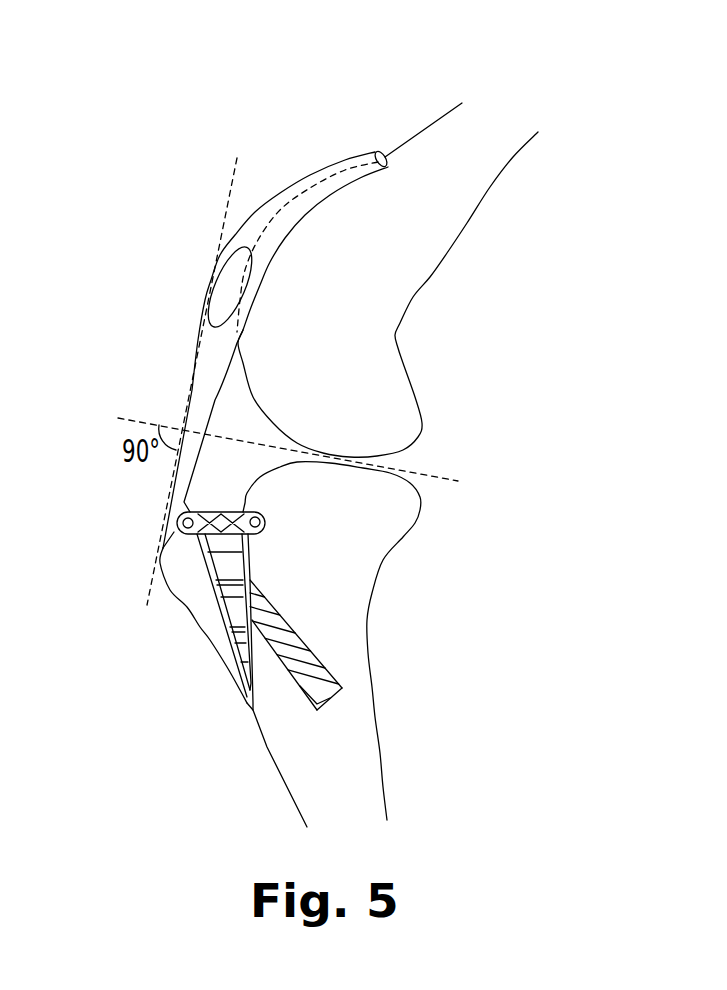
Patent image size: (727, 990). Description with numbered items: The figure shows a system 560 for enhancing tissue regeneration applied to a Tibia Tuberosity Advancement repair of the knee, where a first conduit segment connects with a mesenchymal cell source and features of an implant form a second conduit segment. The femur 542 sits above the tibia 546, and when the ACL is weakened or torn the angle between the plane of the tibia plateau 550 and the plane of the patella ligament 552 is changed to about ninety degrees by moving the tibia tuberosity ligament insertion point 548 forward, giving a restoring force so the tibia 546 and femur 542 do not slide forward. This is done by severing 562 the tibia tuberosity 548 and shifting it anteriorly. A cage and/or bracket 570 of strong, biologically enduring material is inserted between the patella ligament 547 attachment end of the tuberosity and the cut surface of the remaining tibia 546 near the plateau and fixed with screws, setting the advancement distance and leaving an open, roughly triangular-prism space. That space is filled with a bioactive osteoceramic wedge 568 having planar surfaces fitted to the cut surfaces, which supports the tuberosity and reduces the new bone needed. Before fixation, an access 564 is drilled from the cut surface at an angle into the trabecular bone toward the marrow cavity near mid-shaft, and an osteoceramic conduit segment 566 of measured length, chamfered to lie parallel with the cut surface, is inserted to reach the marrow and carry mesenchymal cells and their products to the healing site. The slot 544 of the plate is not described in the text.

The femur 542 is at (340, 335).
The elongated slot of plate 544 is at (226, 290).
The tibia 546 is at (340, 563).
The patella ligament 547 is at (210, 387).
The tibia tuberosity 548 is at (187, 597).
The plane of the tibia plateau 550 is at (452, 478).
The plane of the patella ligament 552 is at (235, 156).
The system for enhancing tissue regeneration 560 is at (136, 66).
The severing 562 is at (251, 710).
The access 564 is at (334, 699).
The osteoceramic conduit segment 566 is at (300, 647).
The wedge 568 is at (222, 572).
The cage and/or bracket 570 is at (176, 524).